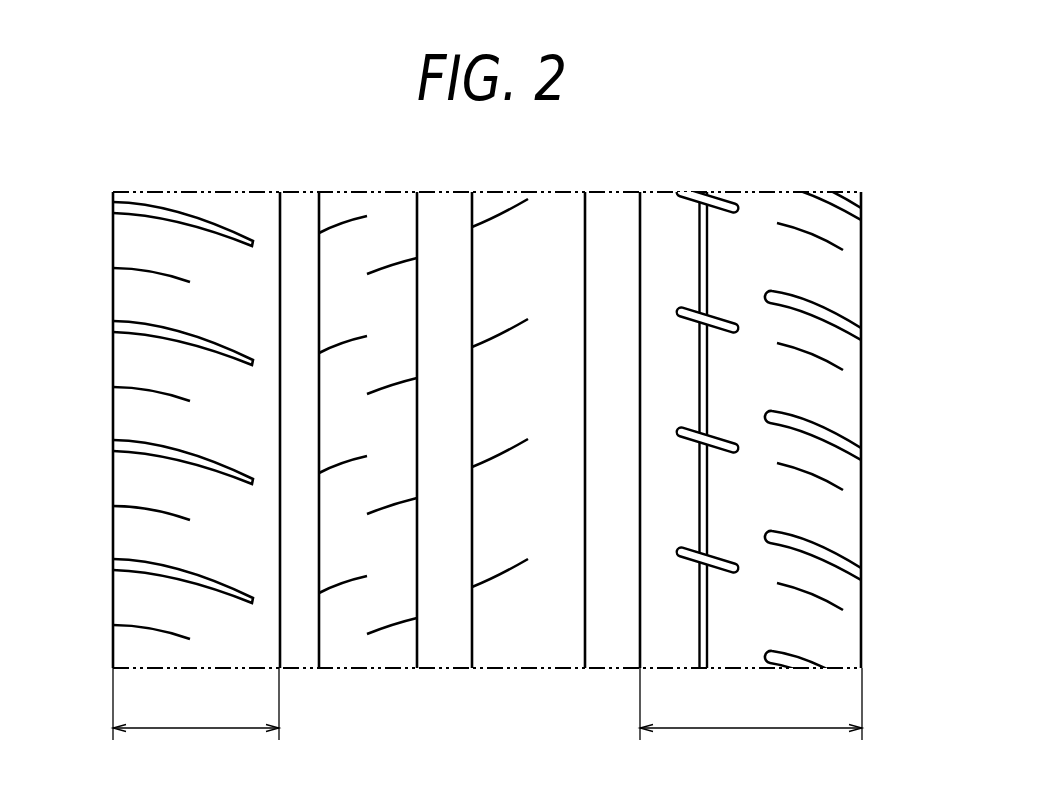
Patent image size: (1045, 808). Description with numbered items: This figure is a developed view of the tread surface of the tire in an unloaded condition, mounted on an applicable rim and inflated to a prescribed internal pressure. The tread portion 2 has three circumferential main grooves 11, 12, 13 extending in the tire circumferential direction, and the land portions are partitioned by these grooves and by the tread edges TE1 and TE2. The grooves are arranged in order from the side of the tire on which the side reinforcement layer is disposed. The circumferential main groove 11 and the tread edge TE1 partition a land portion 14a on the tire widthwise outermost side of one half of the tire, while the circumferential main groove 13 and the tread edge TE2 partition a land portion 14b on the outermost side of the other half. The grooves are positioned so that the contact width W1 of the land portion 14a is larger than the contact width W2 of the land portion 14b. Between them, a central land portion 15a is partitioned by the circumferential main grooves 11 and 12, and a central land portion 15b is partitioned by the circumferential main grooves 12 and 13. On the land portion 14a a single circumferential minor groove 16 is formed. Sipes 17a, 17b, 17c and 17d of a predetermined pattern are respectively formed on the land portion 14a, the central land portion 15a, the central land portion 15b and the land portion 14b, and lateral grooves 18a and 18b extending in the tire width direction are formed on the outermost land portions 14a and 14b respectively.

The tread portion 2 is at (816, 146).
The circumferential main groove 11 is at (609, 218).
The circumferential main groove 12 is at (441, 218).
The circumferential main groove 13 is at (298, 218).
The land portion 14a is at (800, 408).
The land portion 14b is at (154, 420).
The central land portion 15a is at (508, 464).
The central land portion 15b is at (368, 473).
The circumferential minor groove 16 is at (704, 257).
The sipe 17a is at (813, 357).
The sipe 17b is at (500, 575).
The sipe 17c is at (385, 630).
The sipe 17d is at (150, 393).
The lateral groove 18a is at (815, 310).
The lateral groove 18b is at (165, 334).
The tread edge TE1 is at (862, 527).
The tread edge TE2 is at (113, 538).
The contact width W1 is at (751, 704).
The contact width W2 is at (196, 704).